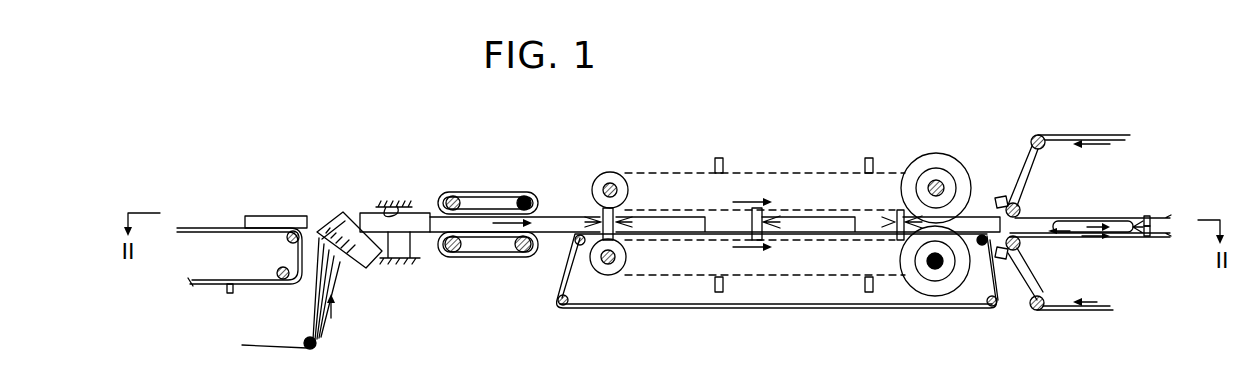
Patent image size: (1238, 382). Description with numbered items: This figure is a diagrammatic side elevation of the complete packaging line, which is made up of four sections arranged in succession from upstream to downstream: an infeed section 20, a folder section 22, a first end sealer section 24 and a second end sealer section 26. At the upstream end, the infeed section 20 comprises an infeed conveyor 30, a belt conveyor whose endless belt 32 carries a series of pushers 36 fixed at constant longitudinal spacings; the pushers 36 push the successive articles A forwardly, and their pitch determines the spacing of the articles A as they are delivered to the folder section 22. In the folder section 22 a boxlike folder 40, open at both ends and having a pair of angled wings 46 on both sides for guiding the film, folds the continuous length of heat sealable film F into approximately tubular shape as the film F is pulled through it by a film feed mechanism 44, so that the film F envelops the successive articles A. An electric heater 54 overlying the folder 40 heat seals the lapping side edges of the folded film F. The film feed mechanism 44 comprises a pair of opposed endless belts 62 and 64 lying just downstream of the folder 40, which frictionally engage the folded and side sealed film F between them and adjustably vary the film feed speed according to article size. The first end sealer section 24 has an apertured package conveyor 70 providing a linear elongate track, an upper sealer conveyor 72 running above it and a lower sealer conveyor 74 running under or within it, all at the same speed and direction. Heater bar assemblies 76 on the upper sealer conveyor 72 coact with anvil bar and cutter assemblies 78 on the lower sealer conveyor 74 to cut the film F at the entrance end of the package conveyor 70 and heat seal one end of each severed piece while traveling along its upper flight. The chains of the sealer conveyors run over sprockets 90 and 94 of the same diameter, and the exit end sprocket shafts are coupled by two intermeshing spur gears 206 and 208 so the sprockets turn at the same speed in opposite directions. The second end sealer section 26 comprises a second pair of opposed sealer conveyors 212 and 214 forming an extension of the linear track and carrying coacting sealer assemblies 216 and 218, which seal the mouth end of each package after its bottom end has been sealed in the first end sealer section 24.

The infeed section 20 is at (182, 98).
The folder section 22 is at (538, 118).
The first end sealer section 24 is at (990, 118).
The second end sealer section 26 is at (1140, 105).
The infeed conveyor 30 is at (228, 247).
The endless belt 32 is at (203, 214).
The pushers 36 is at (223, 310).
The articles A is at (293, 212).
The folder 40 is at (416, 208).
The film feed mechanism 44 is at (488, 222).
The angled wings 46 is at (365, 262).
The electric heater 54 is at (361, 204).
The endless belt 62 is at (467, 191).
The endless belt 64 is at (489, 260).
The package conveyor 70 is at (636, 310).
The upper sealer conveyor 72 is at (760, 173).
The lower sealer conveyor 74 is at (798, 280).
The heater bar assemblies 76 is at (717, 158).
The anvil bar and cutter assemblies 78 is at (720, 293).
The sprockets 90 is at (603, 177).
The sprockets 94 is at (607, 268).
The spur gear 206 is at (943, 162).
The spur gear 208 is at (930, 290).
The upper sealer conveyor 212 is at (1038, 216).
The lower sealer conveyor 214 is at (1032, 236).
The sealer assemblies 216 is at (998, 196).
The sealer assemblies 218 is at (1014, 258).
The heat sealable film F is at (283, 344).